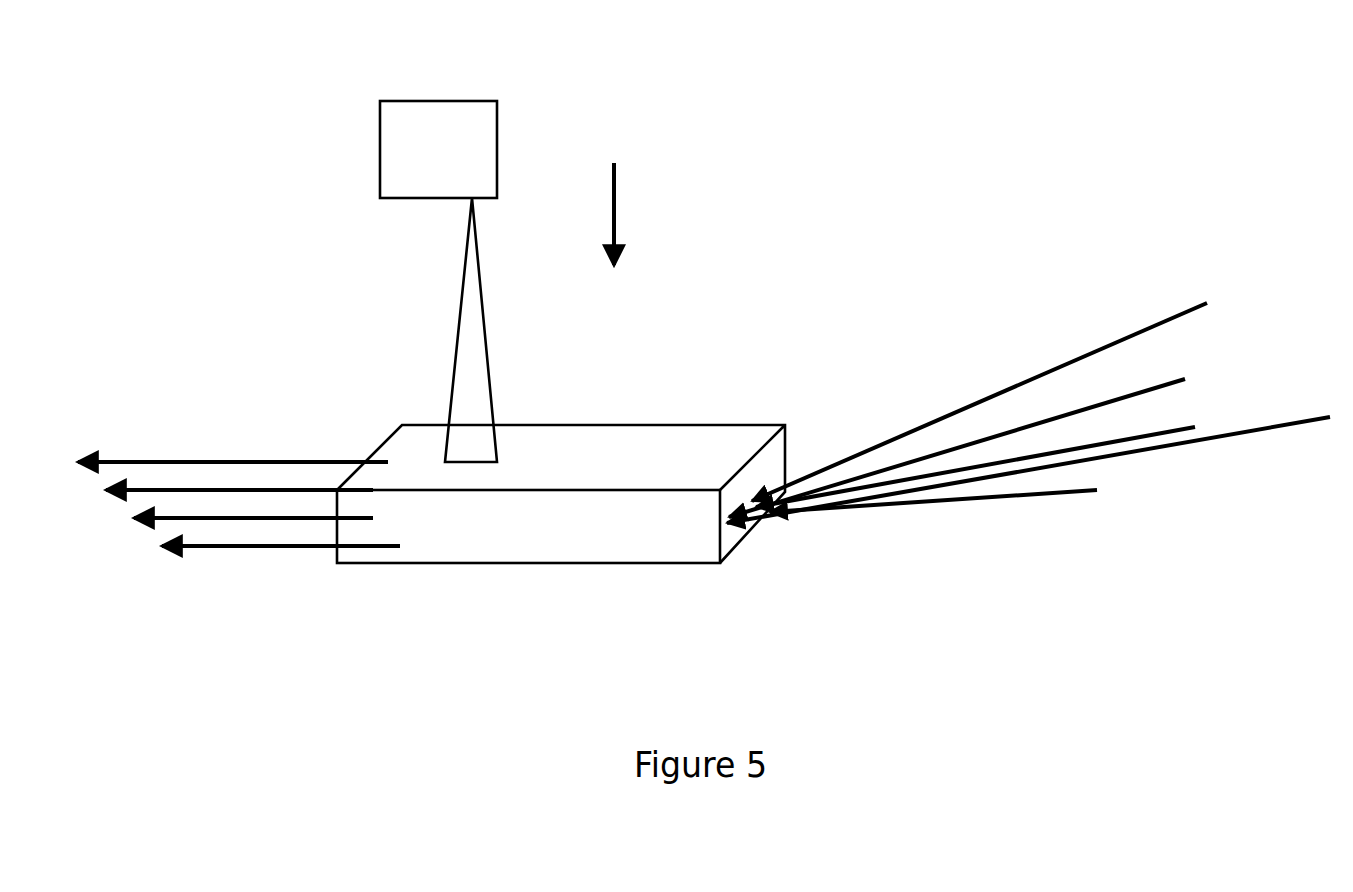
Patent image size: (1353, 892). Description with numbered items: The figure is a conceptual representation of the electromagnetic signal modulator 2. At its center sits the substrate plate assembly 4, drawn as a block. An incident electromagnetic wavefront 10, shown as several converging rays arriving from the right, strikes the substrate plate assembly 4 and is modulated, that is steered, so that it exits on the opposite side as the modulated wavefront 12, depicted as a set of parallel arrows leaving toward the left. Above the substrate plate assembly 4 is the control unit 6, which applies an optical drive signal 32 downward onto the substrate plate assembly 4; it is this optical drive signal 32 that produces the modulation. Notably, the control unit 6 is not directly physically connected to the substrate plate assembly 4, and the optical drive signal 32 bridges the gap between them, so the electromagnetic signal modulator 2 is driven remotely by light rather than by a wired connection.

The electromagnetic signal modulator 2 is at (614, 191).
The substrate plate assembly 4 is at (593, 425).
The control unit 6 is at (380, 151).
The incident electromagnetic wavefront 10 is at (1167, 450).
The modulated wavefront 12 is at (303, 552).
The optical drive signal 32 is at (457, 318).